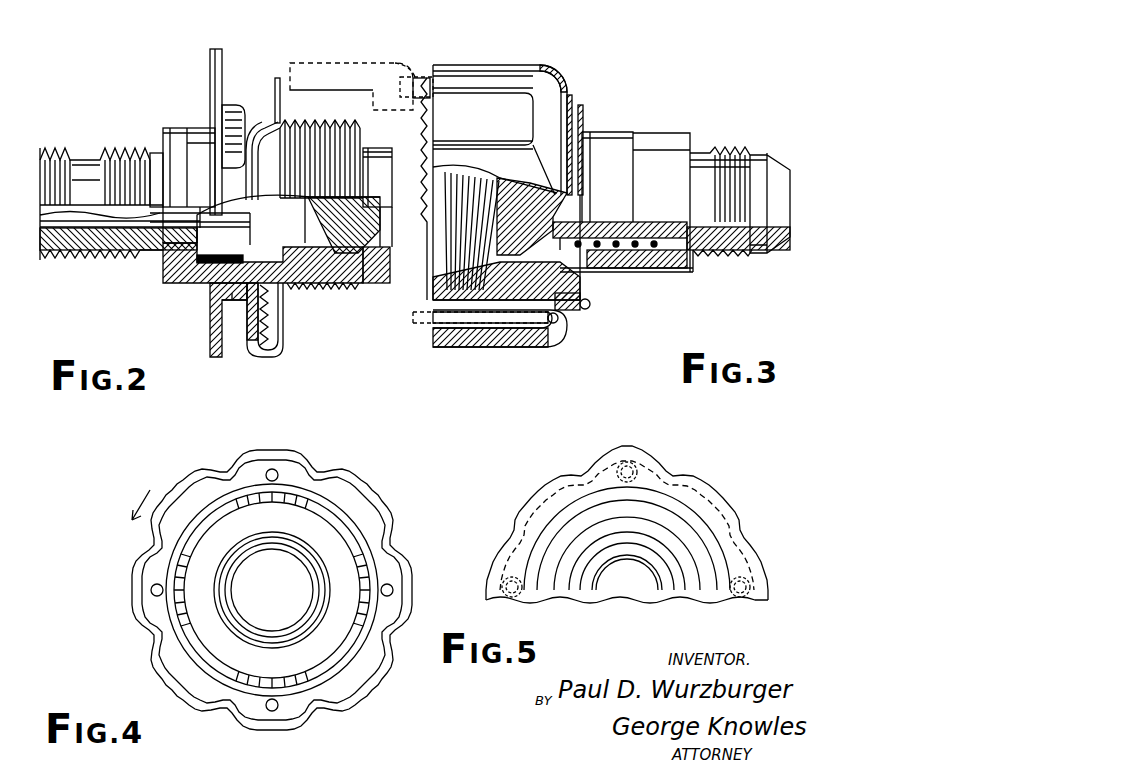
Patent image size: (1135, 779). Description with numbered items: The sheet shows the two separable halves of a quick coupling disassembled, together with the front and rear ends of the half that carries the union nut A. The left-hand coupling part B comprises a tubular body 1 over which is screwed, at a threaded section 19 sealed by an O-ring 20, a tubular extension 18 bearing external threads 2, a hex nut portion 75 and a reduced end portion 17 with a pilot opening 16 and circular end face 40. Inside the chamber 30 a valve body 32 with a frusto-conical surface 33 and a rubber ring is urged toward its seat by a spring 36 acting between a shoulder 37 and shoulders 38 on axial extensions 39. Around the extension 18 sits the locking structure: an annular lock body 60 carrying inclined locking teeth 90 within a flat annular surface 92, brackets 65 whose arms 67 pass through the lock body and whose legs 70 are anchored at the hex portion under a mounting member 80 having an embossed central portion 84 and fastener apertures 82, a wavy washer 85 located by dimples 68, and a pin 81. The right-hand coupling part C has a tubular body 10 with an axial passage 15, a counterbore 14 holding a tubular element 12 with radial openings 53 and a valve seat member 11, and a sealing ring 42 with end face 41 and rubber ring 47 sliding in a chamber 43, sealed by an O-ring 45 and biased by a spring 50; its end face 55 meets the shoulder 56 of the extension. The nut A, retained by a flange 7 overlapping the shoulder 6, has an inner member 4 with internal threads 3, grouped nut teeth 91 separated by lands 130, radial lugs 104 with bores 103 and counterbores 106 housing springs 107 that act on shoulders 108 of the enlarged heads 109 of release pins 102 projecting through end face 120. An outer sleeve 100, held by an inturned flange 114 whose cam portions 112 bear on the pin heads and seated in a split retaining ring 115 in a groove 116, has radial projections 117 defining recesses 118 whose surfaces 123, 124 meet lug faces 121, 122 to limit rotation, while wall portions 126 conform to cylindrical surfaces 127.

In FIG. 2, the tubular body 1 is at (92, 255).
In FIG. 2, the external threads 2 is at (318, 120).
In FIG. 3, the internal threads 3 is at (445, 273).
In FIG. 4, the internal threads 3 is at (232, 530).
In FIG. 3, the internal body member 4 is at (582, 306).
In FIG. 4, the internal body member 4 is at (345, 500).
In FIG. 5, the internal body member 4 is at (560, 530).
In FIG. 3, the shoulder 6 is at (576, 285).
In FIG. 3, the circular flange 7 is at (590, 303).
In FIG. 3, the tubular body 10 is at (690, 272).
In FIG. 5, the tubular body 10 is at (688, 584).
In FIG. 3, the valve seat member 11 is at (465, 175).
In FIG. 4, the valve seat member 11 is at (282, 580).
In FIG. 5, the valve seat member 11 is at (635, 590).
In FIG. 3, the tubular element 12 is at (605, 222).
In FIG. 5, the tubular element 12 is at (642, 587).
In FIG. 3, the counterbore 14 is at (665, 222).
In FIG. 3, the internal axial passage 15 is at (786, 240).
In FIG. 5, the internal axial passage 15 is at (652, 566).
In FIG. 2, the pilot opening 16 is at (393, 224).
In FIG. 2, the reduced diameter tubular end portion 17 is at (376, 106).
In FIG. 2, the tubular extension 18 is at (340, 288).
In FIG. 2, the threaded section 19 is at (268, 290).
In FIG. 2, the O-ring 20 is at (205, 268).
In FIG. 2, the chamber 30 is at (310, 275).
In FIG. 2, the valve body 32 is at (345, 225).
In FIG. 2, the frusto-conical surface 33 is at (352, 268).
In FIG. 2, the helical coil compression spring 36 is at (163, 262).
In FIG. 2, the shoulder 37 is at (165, 215).
In FIG. 2, the shoulders 38 is at (258, 213).
In FIG. 2, the axial extensions 39 is at (240, 264).
In FIG. 2, the circular end face 40 is at (393, 254).
In FIG. 3, the end face 41 is at (482, 215).
In FIG. 3, the sealing ring 42 is at (490, 240).
In FIG. 4, the sealing ring 42 is at (240, 614).
In FIG. 3, the cylindrical chamber 43 is at (625, 268).
In FIG. 3, the O-ring 45 is at (570, 228).
In FIG. 4, the rubber ring 47 is at (325, 583).
In FIG. 3, the helical coil compression spring 50 is at (612, 268).
In FIG. 3, the radial openings 53 is at (593, 220).
In FIG. 2, the annular end face 55 is at (340, 120).
In FIG. 3, the annular radial shoulder 56 is at (495, 262).
In FIG. 4, the annular radial shoulder 56 is at (318, 595).
In FIG. 2, the annular lock body 60 is at (282, 125).
In FIG. 2, the retaining arm and spring locating brackets 65 is at (250, 335).
In FIG. 2, the bracket arm 67 is at (277, 78).
In FIG. 2, the dimple 68 is at (200, 128).
In FIG. 2, the legs 70 is at (216, 282).
In FIG. 2, the hex nut portion 75 is at (213, 272).
In FIG. 2, the mounting member 80 is at (212, 352).
In FIG. 2, the pin 81 is at (232, 301).
In FIG. 2, the apertures 82 is at (212, 330).
In FIG. 2, the central portion 84 is at (216, 50).
In FIG. 2, the wavy washer 85 is at (240, 108).
In FIG. 2, the locking teeth 90 is at (283, 325).
In FIG. 3, the nut teeth 91 is at (424, 75).
In FIG. 4, the nut teeth 91 is at (280, 500).
In FIG. 2, the flat annular surface 92 is at (282, 345).
In FIG. 3, the outer member or sleeve 100 is at (437, 350).
In FIG. 4, the outer member or sleeve 100 is at (160, 645).
In FIG. 5, the outer member or sleeve 100 is at (740, 540).
In FIG. 3, the release pins 102 is at (525, 348).
In FIG. 4, the release pins 102 is at (278, 466).
In FIG. 3, the bores 103 is at (430, 324).
In FIG. 4, the radial ears or lugs 104 is at (150, 570).
In FIG. 3, the counterbores 106 is at (450, 348).
In FIG. 3, the helical coil compression springs 107 is at (480, 348).
In FIG. 3, the shoulders 108 is at (566, 340).
In FIG. 3, the enlarged heads 109 is at (550, 330).
In FIG. 3, the cam portions 112 is at (548, 155).
In FIG. 3, the inturned flange 114 is at (560, 74).
In FIG. 3, the split retaining ring 115 is at (572, 95).
In FIG. 5, the split retaining ring 115 is at (582, 492).
In FIG. 3, the circumferential groove 116 is at (590, 308).
In FIG. 4, the radial projections 117 is at (406, 578).
In FIG. 5, the radial projections 117 is at (690, 460).
In FIG. 4, the recesses 118 is at (382, 520).
In FIG. 3, the inner end face 120 is at (435, 342).
In FIG. 4, the radial side face 121 is at (300, 478).
In FIG. 4, the radial side face 122 is at (255, 470).
In FIG. 4, the radial surface 123 is at (295, 465).
In FIG. 4, the radial surface 124 is at (200, 480).
In FIG. 4, the wall portions 126 is at (370, 650).
In FIG. 5, the wall portions 126 is at (732, 518).
In FIG. 4, the cylindrical surface portions 127 is at (160, 615).
In FIG. 3, the lands 130 is at (418, 100).
In FIG. 3, the union nut A is at (548, 52).
In FIG. 5, the union nut A is at (737, 463).
In FIG. 2, the coupling part B is at (156, 113).
In FIG. 3, the coupling part C is at (692, 126).